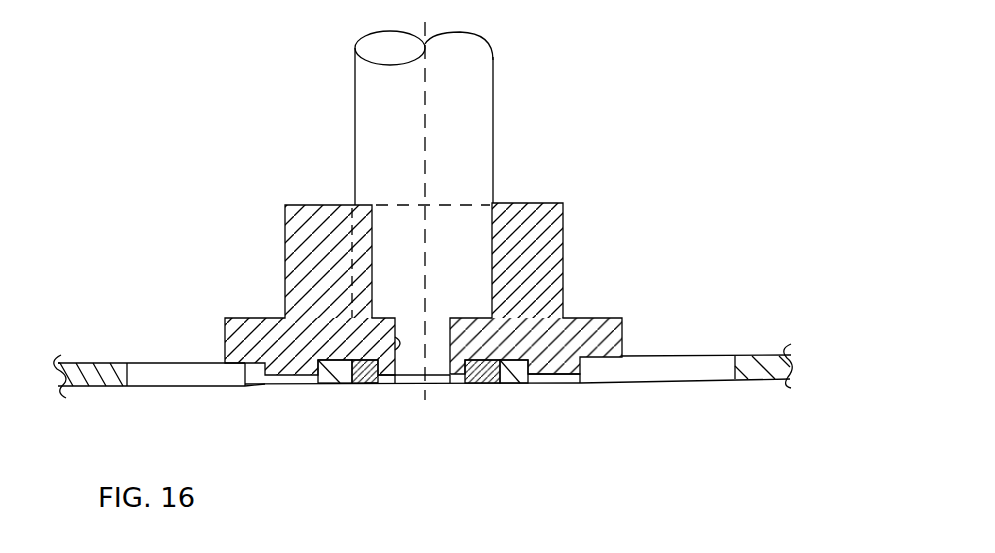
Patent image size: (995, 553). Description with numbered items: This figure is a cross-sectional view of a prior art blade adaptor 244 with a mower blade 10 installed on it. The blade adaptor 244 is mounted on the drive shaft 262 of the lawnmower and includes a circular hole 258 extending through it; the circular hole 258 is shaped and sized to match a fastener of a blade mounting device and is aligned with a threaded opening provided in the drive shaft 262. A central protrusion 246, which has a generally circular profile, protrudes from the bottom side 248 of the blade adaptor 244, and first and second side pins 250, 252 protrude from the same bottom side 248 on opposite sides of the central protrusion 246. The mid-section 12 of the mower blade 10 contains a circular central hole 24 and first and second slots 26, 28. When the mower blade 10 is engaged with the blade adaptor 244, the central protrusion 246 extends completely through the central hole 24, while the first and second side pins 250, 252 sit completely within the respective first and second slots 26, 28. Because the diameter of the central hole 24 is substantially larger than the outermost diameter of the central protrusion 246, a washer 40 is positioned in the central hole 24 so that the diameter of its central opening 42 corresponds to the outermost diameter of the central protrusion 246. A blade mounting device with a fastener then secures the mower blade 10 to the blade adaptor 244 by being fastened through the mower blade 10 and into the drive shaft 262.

The mower blade 10 is at (84, 387).
The mid-section 12 is at (111, 387).
The central hole 24 is at (358, 384).
The first slot 26 is at (140, 386).
The second slot 28 is at (732, 368).
The washer 40 is at (372, 384).
The central opening 42 is at (391, 384).
The blade adaptor 244 is at (563, 259).
The central protrusion 246 is at (458, 383).
The bottom side 248 is at (246, 387).
The first side pin 250 is at (295, 384).
The second side pin 252 is at (563, 383).
The circular hole 258 is at (393, 337).
The drive shaft 262 is at (467, 138).